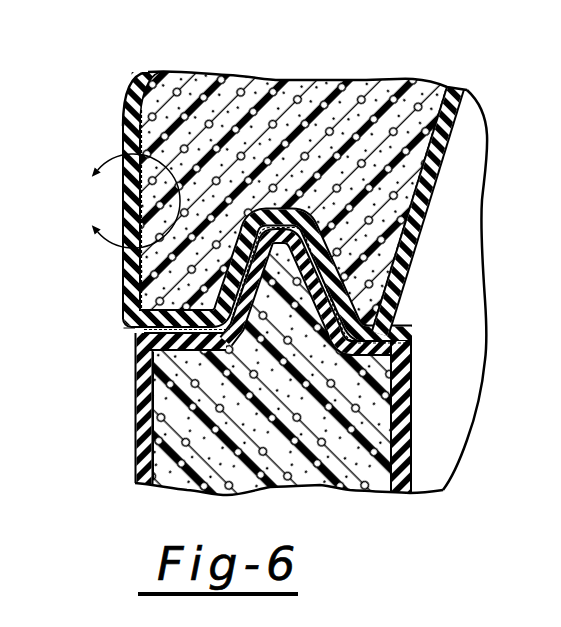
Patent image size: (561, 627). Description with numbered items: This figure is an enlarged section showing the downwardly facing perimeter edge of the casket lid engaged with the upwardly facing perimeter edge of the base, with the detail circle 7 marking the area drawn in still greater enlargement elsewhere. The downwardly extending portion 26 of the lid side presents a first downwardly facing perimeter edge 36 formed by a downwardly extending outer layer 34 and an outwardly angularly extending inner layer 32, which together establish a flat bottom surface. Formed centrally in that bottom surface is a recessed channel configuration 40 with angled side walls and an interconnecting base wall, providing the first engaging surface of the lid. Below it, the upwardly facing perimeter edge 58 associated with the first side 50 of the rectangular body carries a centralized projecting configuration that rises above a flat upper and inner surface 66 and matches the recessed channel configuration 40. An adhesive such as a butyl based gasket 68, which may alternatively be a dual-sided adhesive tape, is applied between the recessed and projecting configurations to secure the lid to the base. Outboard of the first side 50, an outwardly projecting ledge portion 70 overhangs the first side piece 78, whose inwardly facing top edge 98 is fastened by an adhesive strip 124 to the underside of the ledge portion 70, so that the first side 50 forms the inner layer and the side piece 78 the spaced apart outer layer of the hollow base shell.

The downwardly extending portion 26 is at (123, 117).
The recessed channel configuration 40 is at (288, 205).
The detail view circle (FIG. 7) 7 is at (123, 201).
The outer layer 34 is at (121, 262).
The first downwardly facing perimeter edge 36 is at (119, 336).
The adhesive strip 124 is at (142, 336).
The outwardly projecting ledge portion 70 is at (150, 345).
The top edge 98 is at (139, 354).
The first side 50 is at (134, 425).
The first side piece 78 is at (131, 478).
The upwardly facing perimeter edge 58 is at (403, 276).
The inner layer 32 is at (408, 294).
The butyl based gasket 68 is at (388, 335).
The flat upper and inner surface 66 is at (406, 347).